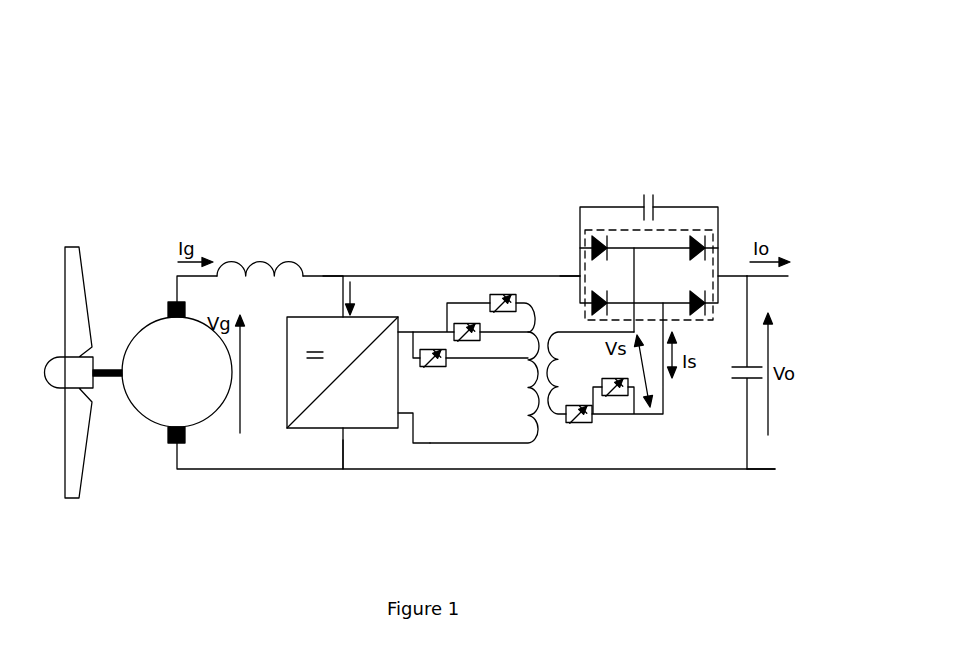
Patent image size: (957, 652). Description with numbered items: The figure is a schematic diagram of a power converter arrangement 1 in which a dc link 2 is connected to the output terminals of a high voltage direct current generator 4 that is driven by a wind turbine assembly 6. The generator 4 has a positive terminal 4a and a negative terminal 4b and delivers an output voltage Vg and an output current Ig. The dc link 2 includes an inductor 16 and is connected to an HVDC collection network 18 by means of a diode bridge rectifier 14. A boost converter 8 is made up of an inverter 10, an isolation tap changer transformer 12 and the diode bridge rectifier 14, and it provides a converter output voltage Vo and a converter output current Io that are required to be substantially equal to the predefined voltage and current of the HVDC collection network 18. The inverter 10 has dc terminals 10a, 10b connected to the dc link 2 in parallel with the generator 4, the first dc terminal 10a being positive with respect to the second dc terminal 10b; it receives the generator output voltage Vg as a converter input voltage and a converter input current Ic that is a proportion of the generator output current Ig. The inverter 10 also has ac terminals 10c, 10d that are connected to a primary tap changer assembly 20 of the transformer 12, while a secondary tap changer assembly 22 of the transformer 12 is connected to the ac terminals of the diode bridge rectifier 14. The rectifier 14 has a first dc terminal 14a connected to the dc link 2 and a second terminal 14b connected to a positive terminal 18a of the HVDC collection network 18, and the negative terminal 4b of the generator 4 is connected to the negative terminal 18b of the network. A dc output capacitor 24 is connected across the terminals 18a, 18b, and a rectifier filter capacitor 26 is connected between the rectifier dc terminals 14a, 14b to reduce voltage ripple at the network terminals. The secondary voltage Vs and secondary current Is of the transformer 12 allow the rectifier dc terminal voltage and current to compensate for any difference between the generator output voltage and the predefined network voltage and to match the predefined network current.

The power converter arrangement 1 is at (365, 112).
The dc link 2 is at (295, 237).
The high voltage direct current generator 4 is at (143, 327).
The positive terminal of generator 4a is at (170, 300).
The negative terminal of generator 4b is at (202, 470).
The wind turbine assembly 6 is at (92, 427).
The boost converter 8 is at (447, 220).
The inverter 10 is at (313, 430).
The first dc terminal of inverter 10a is at (330, 276).
The second dc terminal of inverter 10b is at (343, 446).
The ac terminal of inverter 10c is at (418, 331).
The ac terminal of inverter 10d is at (427, 443).
The isolation tap changer transformer 12 is at (545, 438).
The diode bridge rectifier 14 is at (672, 230).
The first dc terminal of diode bridge rectifier 14a is at (570, 268).
The second dc terminal of diode bridge rectifier 14b is at (726, 268).
The inductor 16 is at (260, 262).
The HVDC collection network 18 is at (808, 412).
The positive terminal of HVDC collection network 18a is at (783, 283).
The negative terminal of HVDC collection network 18b is at (760, 471).
The primary tap changer assembly 20 is at (490, 296).
The secondary tap changer assembly 22 is at (615, 423).
The dc output capacitor 24 is at (730, 386).
The rectifier filter capacitor 26 is at (634, 190).